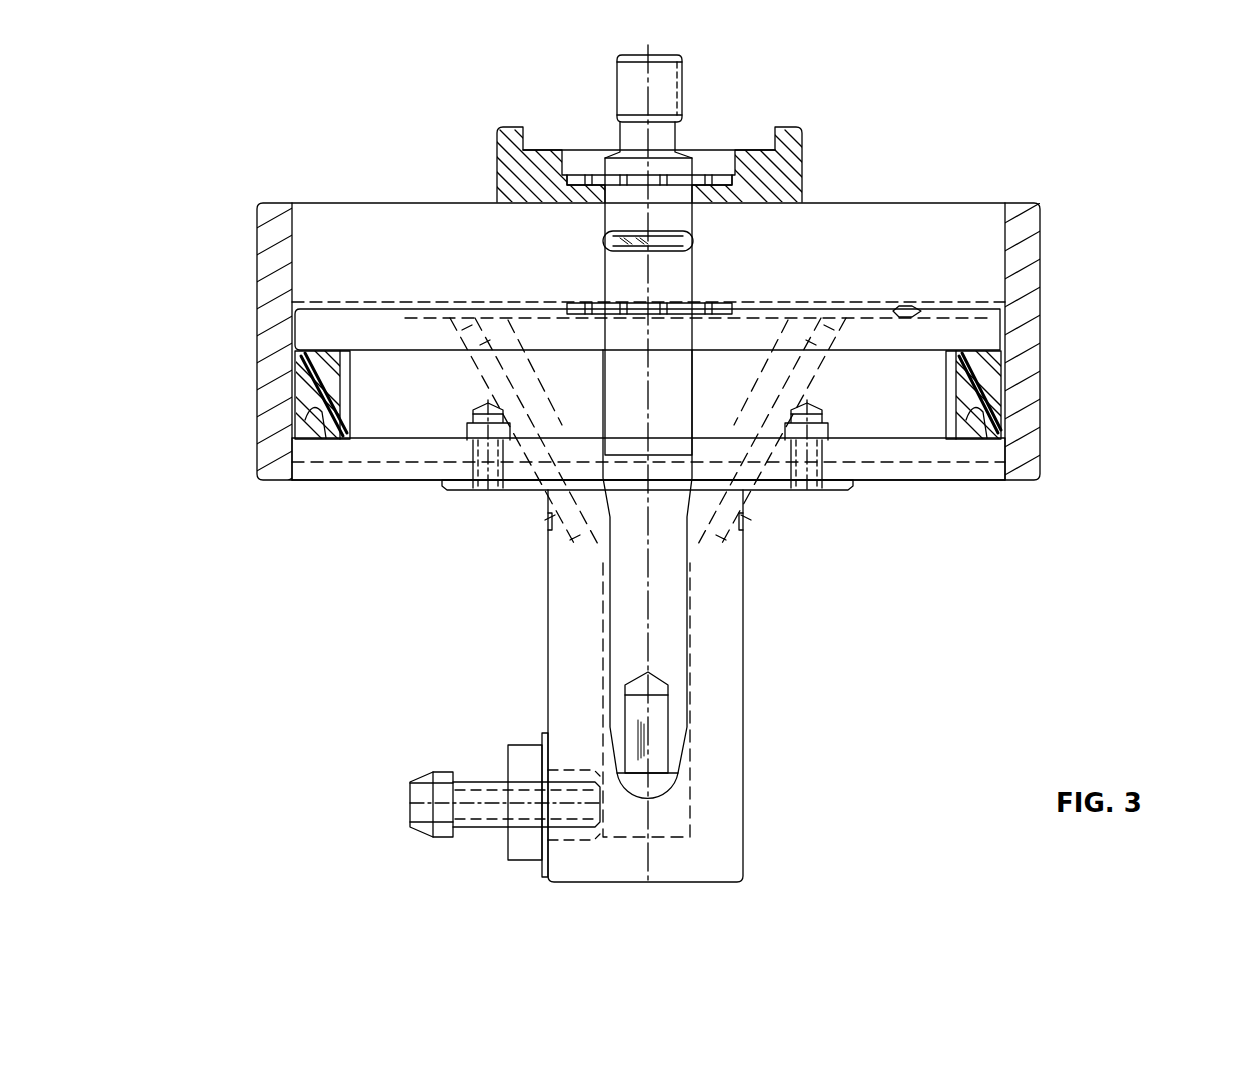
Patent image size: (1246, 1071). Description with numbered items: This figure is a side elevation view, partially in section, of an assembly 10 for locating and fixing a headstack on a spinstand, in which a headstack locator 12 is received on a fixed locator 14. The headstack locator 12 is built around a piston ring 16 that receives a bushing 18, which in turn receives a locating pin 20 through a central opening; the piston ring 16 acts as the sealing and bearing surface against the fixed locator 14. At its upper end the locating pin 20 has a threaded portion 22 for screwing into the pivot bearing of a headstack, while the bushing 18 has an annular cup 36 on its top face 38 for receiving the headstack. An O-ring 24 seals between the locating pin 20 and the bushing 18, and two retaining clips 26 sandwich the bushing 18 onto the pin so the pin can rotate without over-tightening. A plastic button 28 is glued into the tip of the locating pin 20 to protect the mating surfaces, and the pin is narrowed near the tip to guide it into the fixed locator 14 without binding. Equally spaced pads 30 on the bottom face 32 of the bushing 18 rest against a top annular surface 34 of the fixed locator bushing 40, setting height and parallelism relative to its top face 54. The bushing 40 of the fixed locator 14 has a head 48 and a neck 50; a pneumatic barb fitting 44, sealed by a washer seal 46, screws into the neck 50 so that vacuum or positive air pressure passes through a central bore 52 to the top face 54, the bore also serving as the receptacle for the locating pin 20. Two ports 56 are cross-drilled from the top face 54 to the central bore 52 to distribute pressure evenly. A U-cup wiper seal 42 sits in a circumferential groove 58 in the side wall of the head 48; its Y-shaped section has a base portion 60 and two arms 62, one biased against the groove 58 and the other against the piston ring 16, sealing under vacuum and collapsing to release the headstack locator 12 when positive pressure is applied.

The assembly 10 is at (1190, 228).
The headstack locator 12 is at (938, 203).
The fixed locator 14 is at (900, 486).
The piston ring 16 is at (1033, 370).
The bushing 18 is at (874, 203).
The locating pin 20 is at (685, 86).
The threaded portion 22 is at (620, 83).
The O-ring 24 is at (692, 241).
The retaining clips 26 is at (580, 177).
The plastic button 28 is at (665, 792).
The pads 30 is at (320, 310).
The bottom face 32 is at (417, 303).
The top annular surface 34 is at (368, 315).
The annular cup 36 is at (765, 133).
The top face 38 is at (448, 203).
The bushing 40 is at (856, 482).
The wiper seal 42 is at (303, 382).
The pneumatic barb fitting 44 is at (473, 820).
The washer seal 46 is at (543, 873).
The head 48 is at (960, 481).
The neck 50 is at (743, 705).
The central bore 52 is at (692, 625).
The top face 54 is at (900, 310).
The ports 56 is at (800, 380).
The circumferential groove 58 is at (1015, 350).
The base portion 60 is at (305, 365).
The arms 62 is at (292, 428).